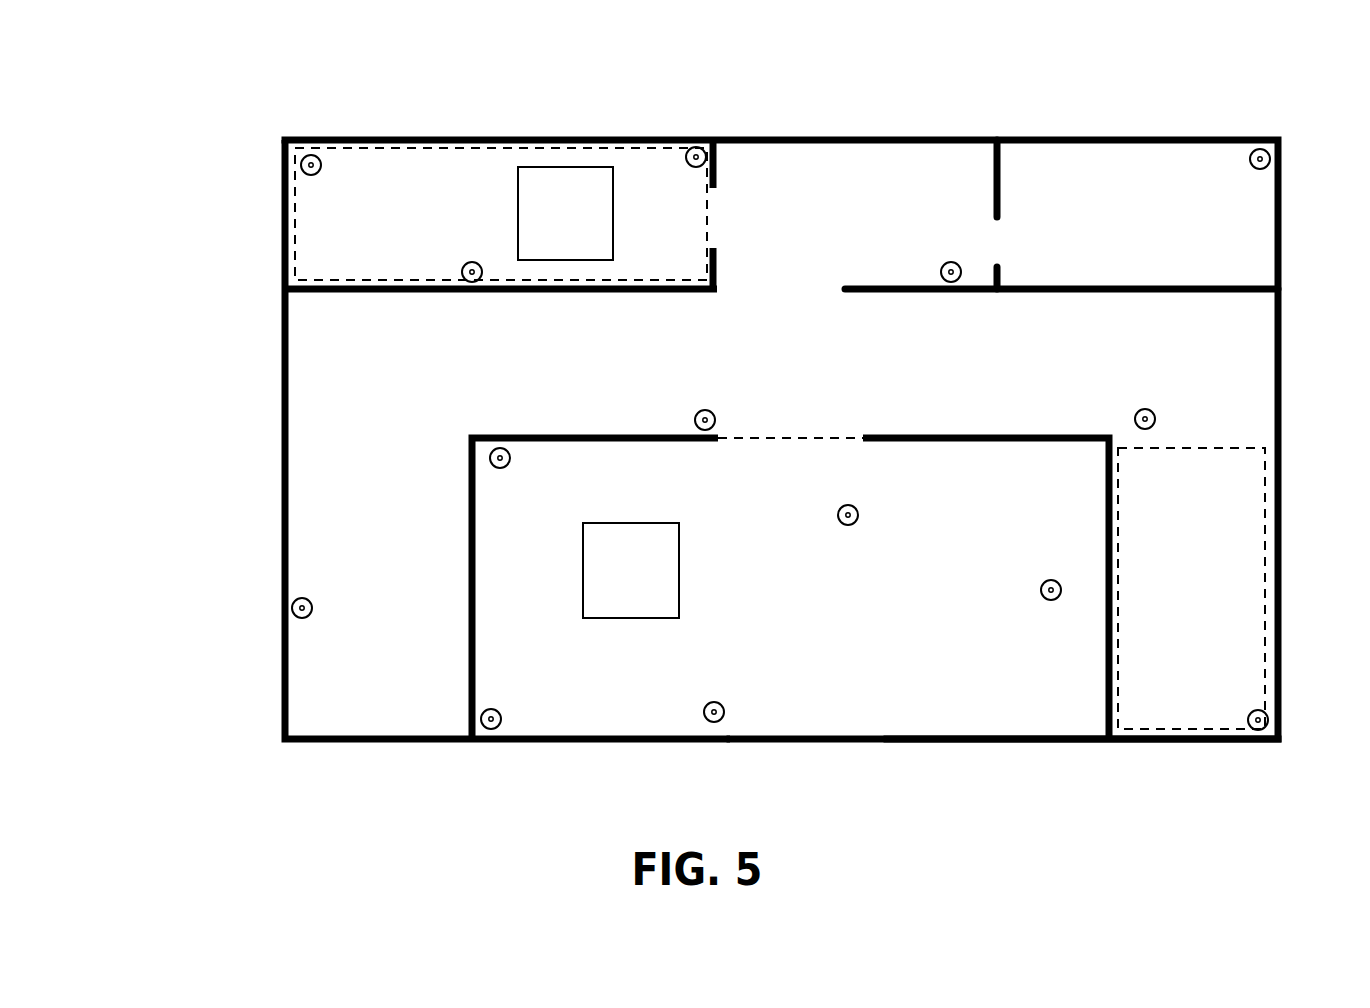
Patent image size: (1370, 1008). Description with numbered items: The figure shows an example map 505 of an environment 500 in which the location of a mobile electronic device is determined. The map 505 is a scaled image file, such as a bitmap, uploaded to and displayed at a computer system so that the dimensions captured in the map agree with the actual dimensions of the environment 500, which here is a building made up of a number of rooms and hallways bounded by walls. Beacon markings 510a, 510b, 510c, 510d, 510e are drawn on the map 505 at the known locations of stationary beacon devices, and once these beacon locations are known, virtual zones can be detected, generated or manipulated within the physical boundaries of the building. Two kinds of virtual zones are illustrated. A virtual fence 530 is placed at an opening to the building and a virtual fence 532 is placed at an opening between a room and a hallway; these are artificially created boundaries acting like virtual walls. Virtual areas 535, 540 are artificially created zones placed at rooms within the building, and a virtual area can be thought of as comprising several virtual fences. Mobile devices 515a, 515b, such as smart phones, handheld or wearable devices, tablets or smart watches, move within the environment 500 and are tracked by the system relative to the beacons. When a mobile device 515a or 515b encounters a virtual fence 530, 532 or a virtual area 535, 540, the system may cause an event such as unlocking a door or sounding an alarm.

The environment 500 is at (189, 59).
The map 505 is at (276, 431).
The beacon marking 510a is at (331, 157).
The beacon marking 510b is at (714, 149).
The beacon marking 510c is at (1278, 146).
The beacon marking 510d is at (318, 597).
The beacon marking 510e is at (719, 409).
The mobile device 515a is at (613, 604).
The mobile device 515b is at (547, 248).
The virtual fence 530 is at (834, 749).
The virtual fence 532 is at (840, 434).
The virtual area 535 is at (555, 141).
The virtual area 540 is at (1200, 441).